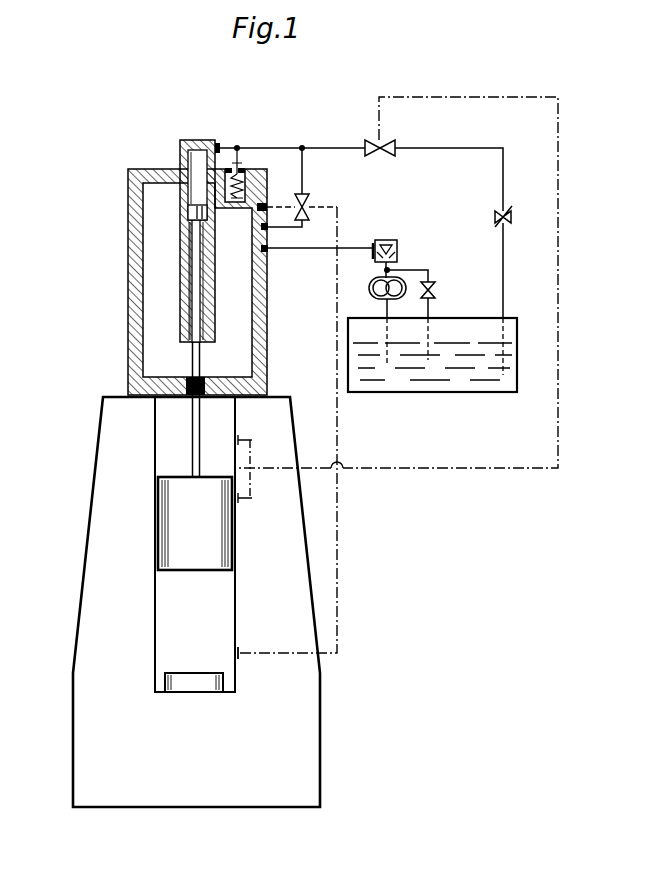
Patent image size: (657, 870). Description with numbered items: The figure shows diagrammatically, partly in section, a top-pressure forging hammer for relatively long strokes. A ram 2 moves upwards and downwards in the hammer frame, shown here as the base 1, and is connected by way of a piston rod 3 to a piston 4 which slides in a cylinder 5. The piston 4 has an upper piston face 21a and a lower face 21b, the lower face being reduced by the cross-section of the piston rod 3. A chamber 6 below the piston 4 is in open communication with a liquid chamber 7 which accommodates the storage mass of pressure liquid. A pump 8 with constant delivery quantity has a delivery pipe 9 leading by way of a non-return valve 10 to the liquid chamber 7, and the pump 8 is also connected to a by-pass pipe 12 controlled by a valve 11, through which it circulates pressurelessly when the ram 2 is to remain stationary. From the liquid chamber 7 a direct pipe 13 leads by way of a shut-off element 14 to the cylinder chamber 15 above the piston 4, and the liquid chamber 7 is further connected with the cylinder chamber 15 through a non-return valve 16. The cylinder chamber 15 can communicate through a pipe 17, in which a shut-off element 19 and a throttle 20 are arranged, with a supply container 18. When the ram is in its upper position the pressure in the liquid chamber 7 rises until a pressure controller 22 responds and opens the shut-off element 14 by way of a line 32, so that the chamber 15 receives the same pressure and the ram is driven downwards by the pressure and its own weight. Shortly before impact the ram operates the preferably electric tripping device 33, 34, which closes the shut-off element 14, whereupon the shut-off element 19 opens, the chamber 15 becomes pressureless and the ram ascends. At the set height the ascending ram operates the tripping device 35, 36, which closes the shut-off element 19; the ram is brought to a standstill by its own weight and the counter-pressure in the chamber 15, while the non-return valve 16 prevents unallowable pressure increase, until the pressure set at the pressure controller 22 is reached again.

The base 1 is at (300, 622).
The ram 2 is at (208, 544).
The piston rod 3 is at (200, 355).
The piston 4 is at (188, 210).
The cylinder 5 is at (183, 316).
The chamber below the piston 6 is at (185, 283).
The liquid chamber 7 is at (145, 362).
The pump 8 is at (374, 283).
The delivery pipe 9 is at (290, 250).
The non-return valve 10 is at (398, 253).
The valve 11 is at (436, 292).
The by-pass pipe 12 is at (430, 270).
The direct pipe 13 is at (304, 222).
The shut-off element 14 is at (310, 203).
The cylinder chamber 15 is at (182, 152).
The non-return valve 16 is at (245, 180).
The pipe 17 is at (455, 148).
The supply container 18 is at (458, 380).
The shut-off element 19 is at (384, 142).
The throttle valve 20 is at (508, 224).
The piston face 21a is at (181, 163).
The lower face of the piston 21b is at (183, 250).
The pressure controller 22 is at (255, 208).
The line 32 is at (284, 203).
The tripping device 33 is at (240, 658).
The tripping device 34 is at (338, 430).
The tripping device 35 is at (250, 460).
The tripping device 36 is at (462, 486).